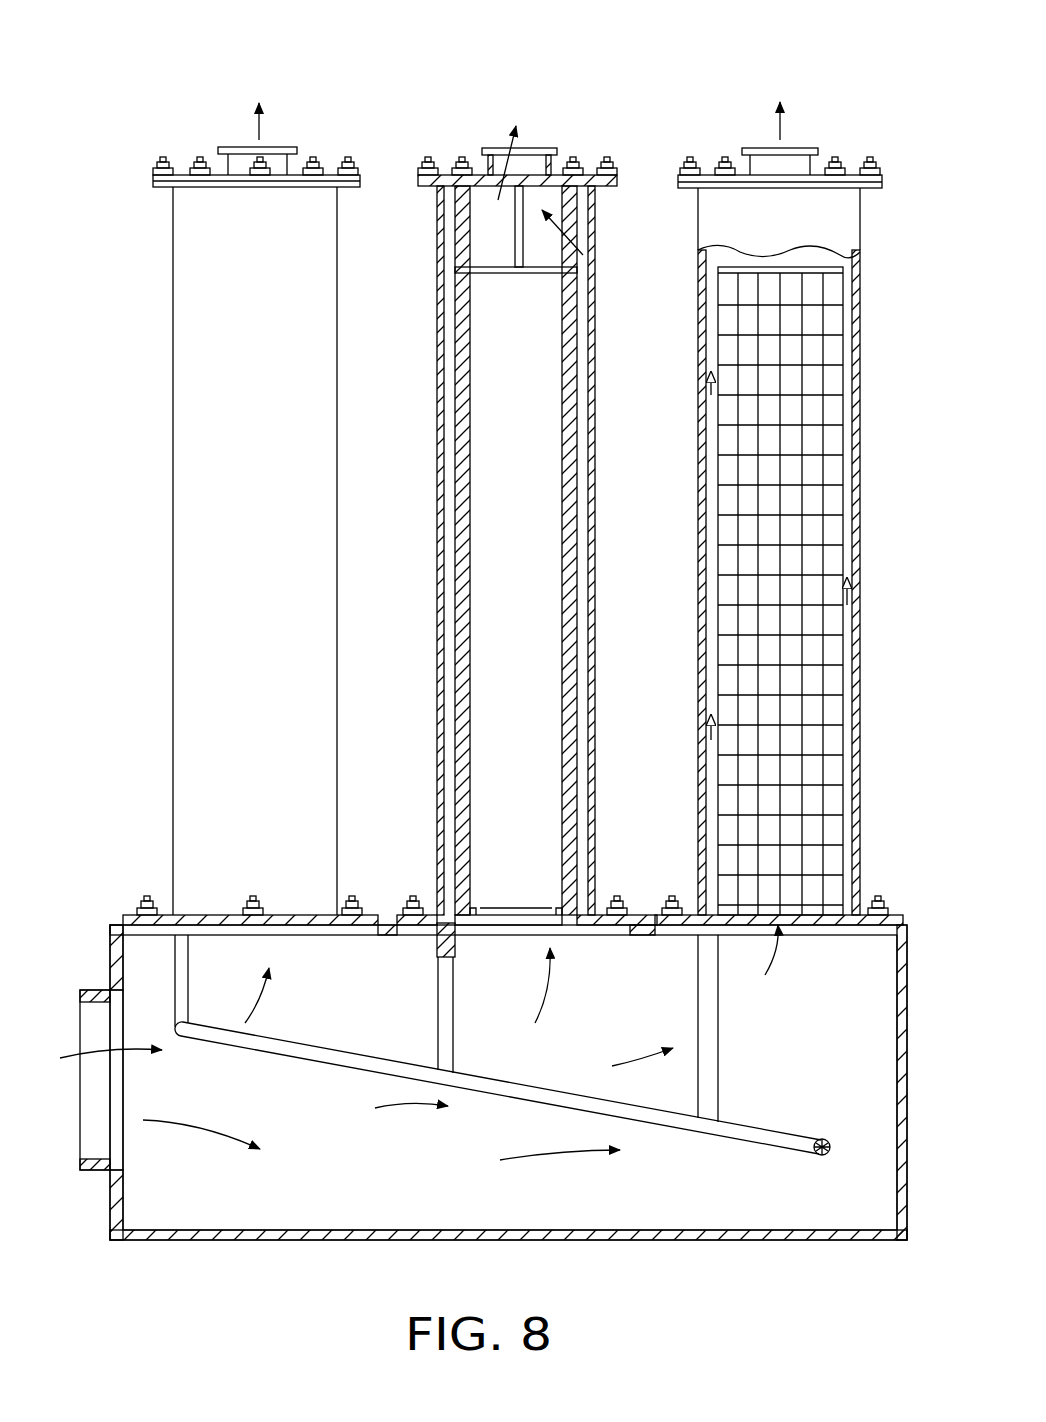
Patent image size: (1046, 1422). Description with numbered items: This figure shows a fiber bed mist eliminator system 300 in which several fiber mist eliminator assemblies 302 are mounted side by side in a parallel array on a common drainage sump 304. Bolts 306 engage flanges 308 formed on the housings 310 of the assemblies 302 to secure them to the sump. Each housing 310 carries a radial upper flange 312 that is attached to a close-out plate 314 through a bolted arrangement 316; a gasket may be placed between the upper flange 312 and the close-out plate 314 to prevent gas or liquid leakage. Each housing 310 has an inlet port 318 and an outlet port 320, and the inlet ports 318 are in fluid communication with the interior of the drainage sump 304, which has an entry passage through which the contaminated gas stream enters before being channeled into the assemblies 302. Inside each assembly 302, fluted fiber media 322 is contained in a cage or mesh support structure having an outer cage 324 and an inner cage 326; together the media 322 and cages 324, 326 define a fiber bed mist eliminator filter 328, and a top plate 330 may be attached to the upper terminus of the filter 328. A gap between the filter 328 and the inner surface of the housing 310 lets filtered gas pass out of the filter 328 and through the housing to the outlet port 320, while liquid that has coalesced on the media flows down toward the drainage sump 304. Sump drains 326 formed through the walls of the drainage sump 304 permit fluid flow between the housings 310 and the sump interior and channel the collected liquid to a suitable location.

The fiber bed mist eliminator system 300 is at (623, 47).
The fiber mist eliminator assembly 302 is at (605, 479).
The drainage sump 304 is at (318, 1240).
The bolt 306 is at (137, 900).
The flange 308 is at (190, 915).
The housing 310 is at (175, 632).
The radial upper flange 312 is at (153, 188).
The close-out plate 314 is at (328, 172).
The bolted arrangement 316 is at (876, 167).
The inlet port 318 is at (305, 935).
The outlet port 320 is at (272, 148).
The fluted fiber media 322 is at (470, 722).
The outer cage 324 is at (442, 738).
The inner cage 326 is at (188, 985).
The fiber bed mist eliminator filter 328 is at (455, 585).
The top plate 330 is at (493, 273).